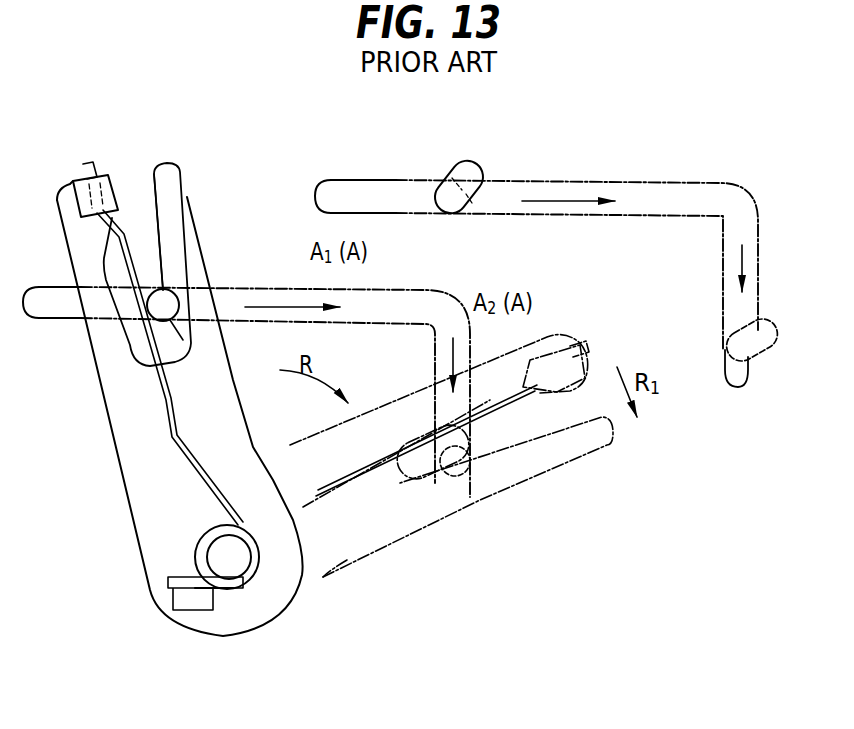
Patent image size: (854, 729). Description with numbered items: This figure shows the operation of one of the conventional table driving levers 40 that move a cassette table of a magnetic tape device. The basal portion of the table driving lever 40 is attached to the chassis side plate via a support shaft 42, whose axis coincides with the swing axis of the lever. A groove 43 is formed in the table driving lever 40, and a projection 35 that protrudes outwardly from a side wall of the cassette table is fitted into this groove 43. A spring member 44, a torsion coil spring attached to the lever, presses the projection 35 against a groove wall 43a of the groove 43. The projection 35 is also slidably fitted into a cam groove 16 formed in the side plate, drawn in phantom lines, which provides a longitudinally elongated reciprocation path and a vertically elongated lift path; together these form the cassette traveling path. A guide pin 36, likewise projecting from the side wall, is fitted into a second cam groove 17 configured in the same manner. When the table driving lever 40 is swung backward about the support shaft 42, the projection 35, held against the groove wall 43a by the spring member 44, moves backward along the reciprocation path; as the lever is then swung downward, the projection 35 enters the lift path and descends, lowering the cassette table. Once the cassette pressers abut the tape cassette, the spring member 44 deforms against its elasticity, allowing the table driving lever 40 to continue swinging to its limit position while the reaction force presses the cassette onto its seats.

The cam groove 16 is at (283, 285).
The cam groove 17 is at (682, 183).
The projection 35 is at (167, 296).
The guide pin 36 is at (457, 212).
The table driving lever 40 is at (113, 433).
The support shaft 42 is at (233, 568).
The groove 43 is at (130, 337).
The groove wall 43a is at (157, 210).
The spring member 44 is at (193, 480).